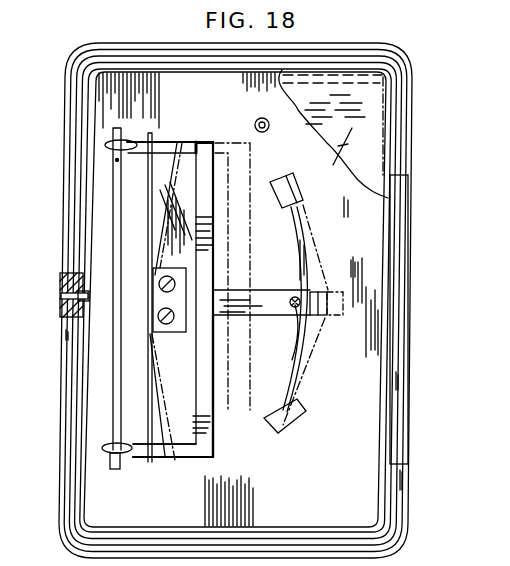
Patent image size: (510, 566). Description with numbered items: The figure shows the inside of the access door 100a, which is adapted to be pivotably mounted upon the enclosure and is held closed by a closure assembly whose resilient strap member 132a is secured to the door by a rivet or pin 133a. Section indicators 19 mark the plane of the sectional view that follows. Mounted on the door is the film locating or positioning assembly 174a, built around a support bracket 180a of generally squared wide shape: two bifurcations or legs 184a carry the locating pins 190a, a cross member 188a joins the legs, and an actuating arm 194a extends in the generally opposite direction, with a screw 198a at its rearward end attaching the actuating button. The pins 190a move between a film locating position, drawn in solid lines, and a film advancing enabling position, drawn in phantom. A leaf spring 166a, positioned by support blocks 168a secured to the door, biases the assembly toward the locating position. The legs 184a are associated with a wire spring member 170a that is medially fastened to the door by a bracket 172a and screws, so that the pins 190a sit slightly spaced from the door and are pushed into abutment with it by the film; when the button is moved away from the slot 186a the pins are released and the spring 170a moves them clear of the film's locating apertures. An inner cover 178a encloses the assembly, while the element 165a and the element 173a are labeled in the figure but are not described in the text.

The access door 100a is at (113, 32).
The section line 19- 19 is at (55, 258).
The resilient strap member 132a is at (62, 292).
The rivet or pin 133a is at (85, 318).
The mounting screw 165a is at (270, 124).
The leaf spring 166a is at (305, 263).
The support blocks 168a is at (297, 193).
The spring member 170a is at (150, 182).
The bracket 172a is at (187, 274).
The lead wires 173a is at (162, 310).
The film locating or positioning assembly 174a is at (219, 321).
The inner cover 178a is at (341, 148).
The support bracket 180a is at (203, 143).
The bifurcations or legs 184a is at (188, 141).
The slot 186a is at (117, 160).
The cross member 188a is at (205, 400).
The pins 190a is at (125, 140).
The actuating arm 194a is at (240, 296).
The screw 198a is at (301, 335).